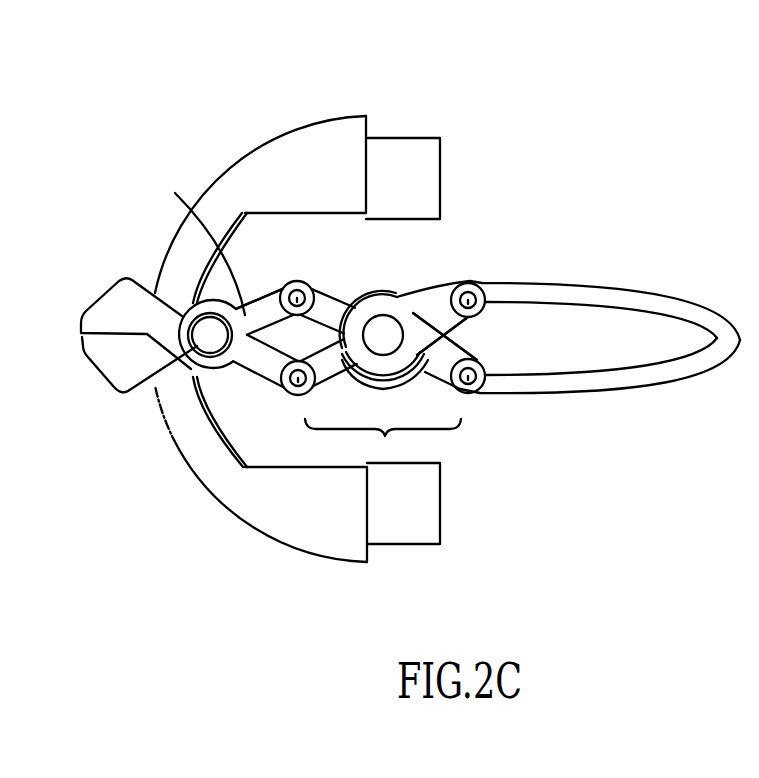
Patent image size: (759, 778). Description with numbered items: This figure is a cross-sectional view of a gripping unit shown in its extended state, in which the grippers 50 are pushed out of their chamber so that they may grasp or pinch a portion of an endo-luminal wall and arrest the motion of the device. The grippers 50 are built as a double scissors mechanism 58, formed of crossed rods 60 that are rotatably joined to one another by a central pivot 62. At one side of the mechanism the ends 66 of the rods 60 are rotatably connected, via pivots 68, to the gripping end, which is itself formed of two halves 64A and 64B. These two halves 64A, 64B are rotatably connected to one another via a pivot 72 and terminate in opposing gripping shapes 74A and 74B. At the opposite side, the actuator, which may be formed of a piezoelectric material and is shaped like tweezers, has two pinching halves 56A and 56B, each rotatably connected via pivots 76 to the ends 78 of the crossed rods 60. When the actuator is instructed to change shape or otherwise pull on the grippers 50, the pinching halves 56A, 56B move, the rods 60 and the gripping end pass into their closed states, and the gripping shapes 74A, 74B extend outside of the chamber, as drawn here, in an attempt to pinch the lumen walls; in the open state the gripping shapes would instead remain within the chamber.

The grippers 50 is at (310, 262).
The pinching half of actuator 56A is at (566, 395).
The pinching half of actuator 56B is at (540, 283).
The double scissors mechanism 58 is at (383, 444).
The rods 60 is at (364, 353).
The pivot 62 is at (383, 334).
The half of gripping end 64A is at (175, 193).
The half of gripping end 64B is at (243, 310).
The ends of rods 66 is at (282, 292).
The pivots 68 is at (318, 304).
The pivot 72 is at (203, 337).
The gripping shape 74A is at (110, 305).
The gripping shape 74B is at (107, 350).
The pivots 76 is at (468, 282).
The ends of crossed rod 78 is at (472, 318).